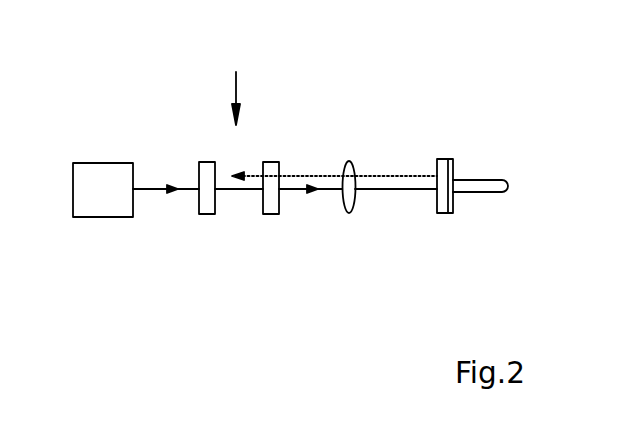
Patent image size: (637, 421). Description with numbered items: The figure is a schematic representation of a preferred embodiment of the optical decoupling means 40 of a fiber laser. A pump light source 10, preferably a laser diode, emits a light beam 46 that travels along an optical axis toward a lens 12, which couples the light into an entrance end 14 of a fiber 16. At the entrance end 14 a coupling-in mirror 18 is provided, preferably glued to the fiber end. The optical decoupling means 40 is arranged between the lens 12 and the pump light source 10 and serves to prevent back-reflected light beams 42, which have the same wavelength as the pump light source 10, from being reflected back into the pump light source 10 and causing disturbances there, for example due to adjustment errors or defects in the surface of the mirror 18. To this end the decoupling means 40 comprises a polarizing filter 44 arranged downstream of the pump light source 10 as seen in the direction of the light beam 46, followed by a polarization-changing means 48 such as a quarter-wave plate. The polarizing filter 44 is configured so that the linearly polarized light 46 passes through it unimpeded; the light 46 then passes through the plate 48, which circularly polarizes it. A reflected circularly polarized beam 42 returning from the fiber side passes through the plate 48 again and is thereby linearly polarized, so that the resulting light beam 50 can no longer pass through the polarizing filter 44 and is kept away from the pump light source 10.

The pump light source 10 is at (85, 180).
The light beam 46 is at (157, 188).
The polarizing filter 44 is at (207, 204).
The polarization-changing means 48 is at (271, 204).
The lens 12 is at (343, 170).
The coupling-in mirror 18 is at (437, 167).
The fiber 16 is at (488, 183).
The entrance end 14 is at (462, 190).
The light beam 50 is at (248, 175).
The back-reflected light beams 42 is at (298, 175).
The optical decoupling means 40 is at (237, 80).